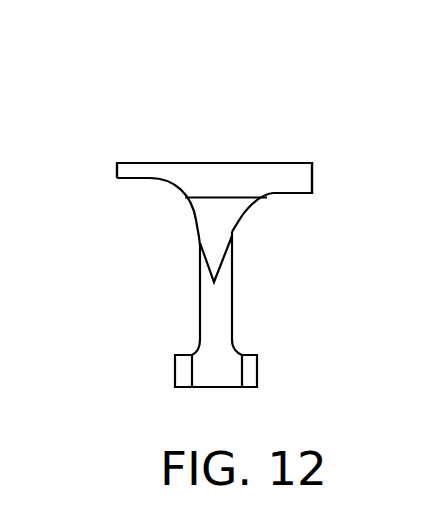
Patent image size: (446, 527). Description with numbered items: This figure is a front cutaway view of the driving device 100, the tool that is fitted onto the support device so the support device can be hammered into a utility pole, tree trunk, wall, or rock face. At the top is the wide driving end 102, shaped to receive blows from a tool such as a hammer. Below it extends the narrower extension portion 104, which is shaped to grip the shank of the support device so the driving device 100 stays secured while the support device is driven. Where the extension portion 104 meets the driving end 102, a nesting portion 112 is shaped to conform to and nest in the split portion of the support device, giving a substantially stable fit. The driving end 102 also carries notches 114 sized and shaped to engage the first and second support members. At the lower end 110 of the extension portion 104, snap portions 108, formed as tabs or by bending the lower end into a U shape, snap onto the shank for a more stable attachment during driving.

The driving device 100 is at (292, 93).
The driving end 102 is at (220, 163).
The extension portion 104 is at (199, 310).
The snap portions 108 is at (175, 358).
The lower end 110 is at (233, 337).
The nesting portion 112 is at (190, 218).
The notches 114 is at (125, 178).